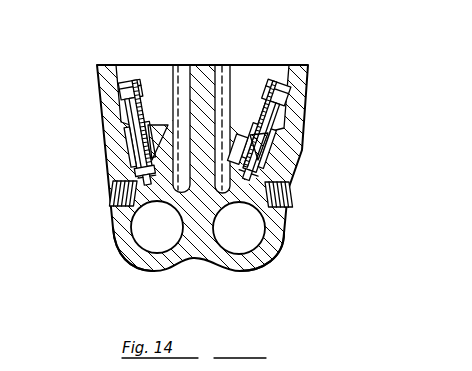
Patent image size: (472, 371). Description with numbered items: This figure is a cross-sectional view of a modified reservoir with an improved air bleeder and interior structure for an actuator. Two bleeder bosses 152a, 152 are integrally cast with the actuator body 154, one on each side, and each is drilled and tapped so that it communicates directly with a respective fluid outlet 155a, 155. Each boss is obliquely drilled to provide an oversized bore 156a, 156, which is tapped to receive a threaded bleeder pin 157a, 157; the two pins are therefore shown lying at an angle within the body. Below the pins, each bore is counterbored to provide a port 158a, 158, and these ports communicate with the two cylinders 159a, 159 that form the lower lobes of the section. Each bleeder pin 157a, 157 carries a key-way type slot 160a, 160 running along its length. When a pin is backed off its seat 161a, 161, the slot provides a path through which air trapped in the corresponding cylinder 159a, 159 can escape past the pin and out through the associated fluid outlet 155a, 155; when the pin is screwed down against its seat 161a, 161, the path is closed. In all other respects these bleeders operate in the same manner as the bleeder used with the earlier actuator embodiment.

The bleeder boss 152 is at (272, 141).
The bleeder boss 152a is at (130, 148).
The actuator body 154 is at (308, 90).
The fluid outlet 155 is at (287, 201).
The fluid outlet 155a is at (113, 195).
The oversized bore 156 is at (239, 150).
The oversized bore 156a is at (140, 170).
The bleeder pin 157 is at (279, 81).
The bleeder pin 157a is at (133, 80).
The port 158 is at (238, 204).
The port 158a is at (149, 204).
The cylinder 159 is at (243, 253).
The cylinder 159a is at (148, 253).
The key-way type slot 160 is at (270, 153).
The key-way type slot 160a is at (138, 134).
The seat 161 is at (270, 177).
The seat 161a is at (118, 181).